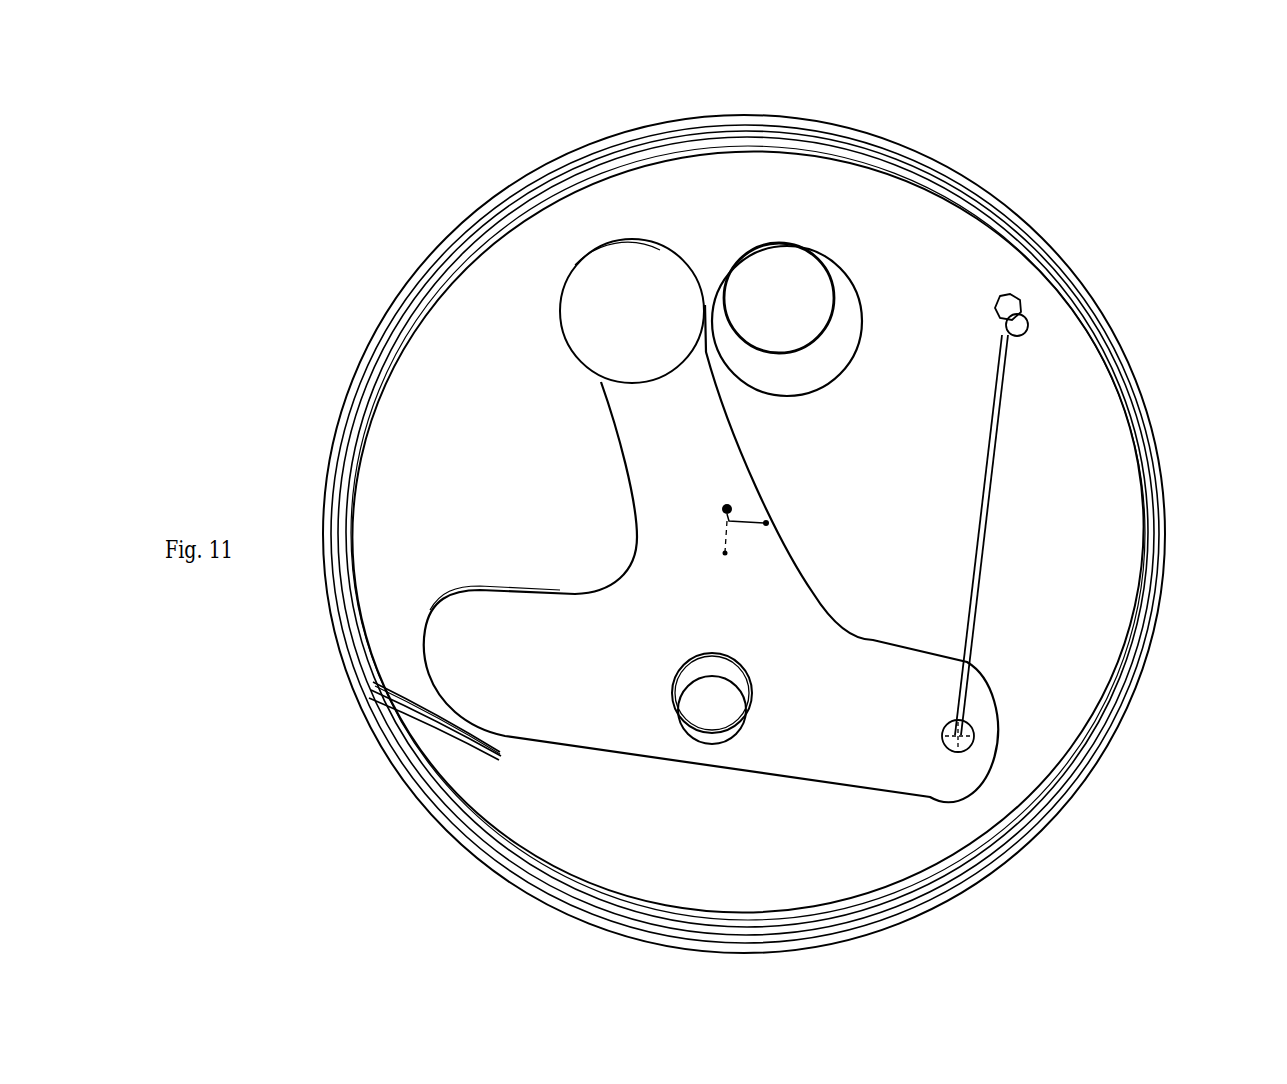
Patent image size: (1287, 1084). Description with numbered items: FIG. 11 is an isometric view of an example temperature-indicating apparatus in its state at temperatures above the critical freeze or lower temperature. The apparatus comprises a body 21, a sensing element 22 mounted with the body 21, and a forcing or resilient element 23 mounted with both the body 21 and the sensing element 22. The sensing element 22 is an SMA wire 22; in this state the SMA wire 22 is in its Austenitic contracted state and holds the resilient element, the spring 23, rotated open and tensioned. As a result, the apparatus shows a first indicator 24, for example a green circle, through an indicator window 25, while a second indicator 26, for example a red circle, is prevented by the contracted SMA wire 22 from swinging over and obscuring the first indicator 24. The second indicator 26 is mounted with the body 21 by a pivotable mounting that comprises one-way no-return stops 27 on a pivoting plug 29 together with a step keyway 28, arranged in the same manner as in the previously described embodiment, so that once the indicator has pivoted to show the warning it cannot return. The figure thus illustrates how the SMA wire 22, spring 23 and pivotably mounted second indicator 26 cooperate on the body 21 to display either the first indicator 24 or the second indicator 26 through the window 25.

The body 21 is at (1155, 592).
The sensing element 22 is at (990, 550).
The resilient element 23 is at (420, 712).
The first indicator 24 is at (773, 243).
The indicator window 25 is at (840, 338).
The second indicator 26 is at (620, 282).
The one-way no-return stops 27 is at (748, 727).
The step keyway 28 is at (712, 672).
The pivoting plug 29 is at (710, 703).